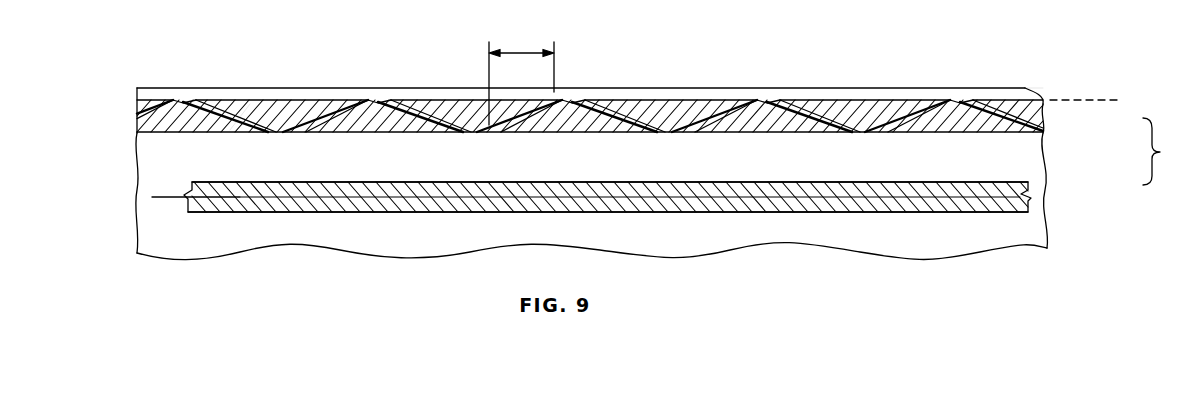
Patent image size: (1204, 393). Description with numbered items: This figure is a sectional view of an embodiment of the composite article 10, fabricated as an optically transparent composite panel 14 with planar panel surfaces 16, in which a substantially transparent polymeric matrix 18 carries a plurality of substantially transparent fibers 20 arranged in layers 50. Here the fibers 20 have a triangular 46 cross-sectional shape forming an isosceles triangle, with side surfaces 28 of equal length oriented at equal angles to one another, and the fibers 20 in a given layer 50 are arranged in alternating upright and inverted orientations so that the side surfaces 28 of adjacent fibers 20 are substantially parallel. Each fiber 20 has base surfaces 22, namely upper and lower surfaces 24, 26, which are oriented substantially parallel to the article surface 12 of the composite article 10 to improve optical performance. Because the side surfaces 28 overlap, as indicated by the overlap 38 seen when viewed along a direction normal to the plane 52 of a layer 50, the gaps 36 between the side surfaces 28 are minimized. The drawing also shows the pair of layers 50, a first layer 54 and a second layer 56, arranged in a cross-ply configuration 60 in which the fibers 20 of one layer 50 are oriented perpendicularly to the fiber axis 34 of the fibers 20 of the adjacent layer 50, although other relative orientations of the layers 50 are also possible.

The composite article 10 is at (152, 88).
The article surface 12 is at (178, 88).
The composite panel 14 is at (1025, 88).
The panel surfaces 16 is at (1022, 100).
The matrix 18 is at (172, 243).
The fibers 20 is at (222, 212).
The base surfaces 22 is at (868, 100).
The upper surface 24 is at (810, 103).
The lower surface 26 is at (963, 212).
The side surfaces 28 is at (300, 118).
The fiber axis 34 is at (155, 197).
The gaps 36 is at (390, 100).
The overlap 38 is at (520, 53).
The triangular cross section 46 is at (255, 110).
The layers 50 is at (637, 156).
The plane 52 is at (1092, 100).
The first layer 54 is at (1047, 118).
The second layer 56 is at (1040, 186).
The cross-ply configuration 60 is at (1167, 151).